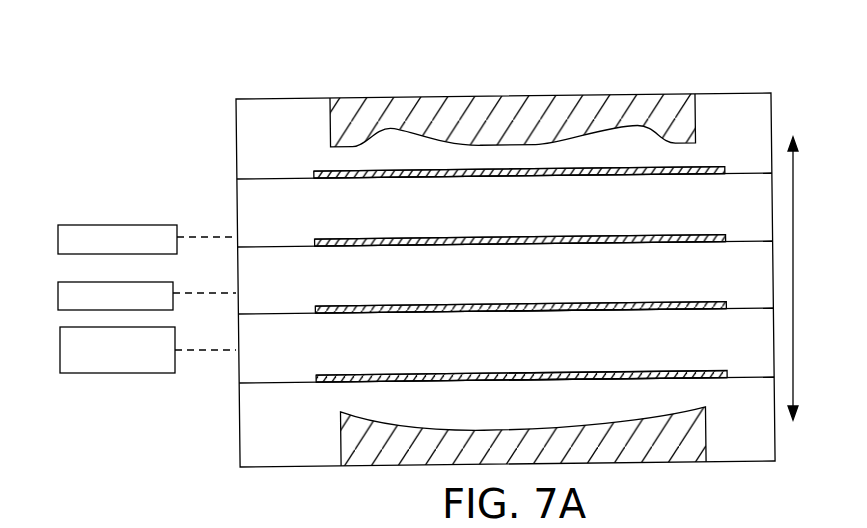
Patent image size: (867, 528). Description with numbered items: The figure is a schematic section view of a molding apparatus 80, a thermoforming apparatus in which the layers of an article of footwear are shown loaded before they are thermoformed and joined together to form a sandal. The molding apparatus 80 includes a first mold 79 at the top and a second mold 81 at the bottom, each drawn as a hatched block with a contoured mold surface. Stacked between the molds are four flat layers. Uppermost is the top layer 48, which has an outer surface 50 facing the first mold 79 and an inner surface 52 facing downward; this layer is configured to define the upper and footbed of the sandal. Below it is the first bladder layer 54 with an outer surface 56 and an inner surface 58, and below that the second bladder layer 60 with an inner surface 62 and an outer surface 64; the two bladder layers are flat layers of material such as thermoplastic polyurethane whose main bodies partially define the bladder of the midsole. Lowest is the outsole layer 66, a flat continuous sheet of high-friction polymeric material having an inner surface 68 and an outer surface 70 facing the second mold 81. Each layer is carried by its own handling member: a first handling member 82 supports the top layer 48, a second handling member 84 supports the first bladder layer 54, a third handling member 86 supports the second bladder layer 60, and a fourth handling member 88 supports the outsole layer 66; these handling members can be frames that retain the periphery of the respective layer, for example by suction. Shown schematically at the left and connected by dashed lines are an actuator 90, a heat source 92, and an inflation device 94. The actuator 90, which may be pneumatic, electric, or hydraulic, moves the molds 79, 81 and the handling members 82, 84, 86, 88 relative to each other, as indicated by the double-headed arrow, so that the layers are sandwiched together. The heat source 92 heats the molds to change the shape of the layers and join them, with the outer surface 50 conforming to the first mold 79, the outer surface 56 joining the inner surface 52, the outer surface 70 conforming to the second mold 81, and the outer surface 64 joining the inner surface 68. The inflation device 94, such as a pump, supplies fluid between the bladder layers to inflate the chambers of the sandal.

The molding apparatus 80 is at (276, 59).
The first mold 79 is at (603, 112).
The second mold 81 is at (612, 450).
The top layer 48 is at (341, 165).
The outer surface 50 is at (698, 166).
The inner surface 52 is at (655, 180).
The first bladder layer 54 is at (342, 233).
The outer surface 56 is at (560, 240).
The inner surface 58 is at (663, 247).
The second bladder layer 60 is at (342, 300).
The inner surface 62 is at (562, 307).
The outer surface 64 is at (672, 313).
The outsole layer 66 is at (343, 368).
The inner surface 68 is at (558, 375).
The outer surface 70 is at (700, 382).
The first handling member 82 is at (275, 182).
The second handling member 84 is at (275, 249).
The third handling member 86 is at (275, 316).
The fourth handling member 88 is at (275, 385).
The actuator 90 is at (147, 225).
The heat source 92 is at (157, 282).
The inflation device 94 is at (157, 328).